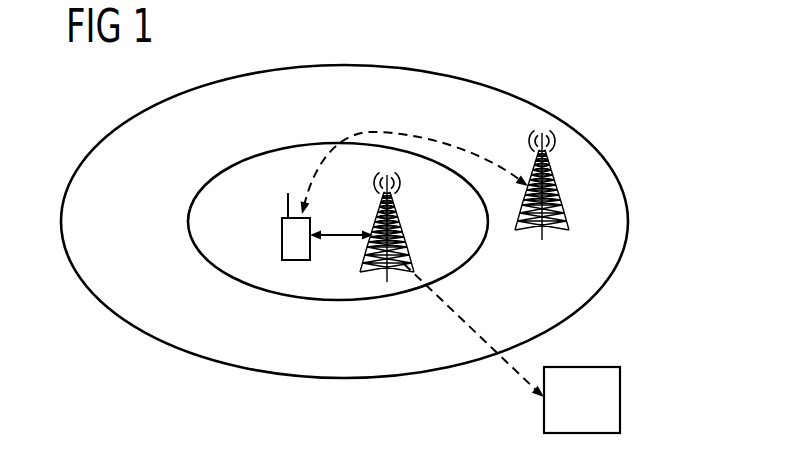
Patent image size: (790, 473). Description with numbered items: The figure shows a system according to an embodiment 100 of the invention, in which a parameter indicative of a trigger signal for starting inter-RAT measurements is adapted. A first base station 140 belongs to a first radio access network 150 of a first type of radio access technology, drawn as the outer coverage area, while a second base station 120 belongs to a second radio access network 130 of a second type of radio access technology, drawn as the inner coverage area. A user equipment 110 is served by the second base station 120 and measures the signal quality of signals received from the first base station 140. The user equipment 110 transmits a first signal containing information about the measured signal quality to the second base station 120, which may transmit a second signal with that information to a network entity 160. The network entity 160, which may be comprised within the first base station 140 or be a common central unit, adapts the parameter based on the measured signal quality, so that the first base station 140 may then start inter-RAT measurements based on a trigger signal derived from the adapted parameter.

The embodiment 100 is at (624, 63).
The user equipment 110 is at (282, 233).
The second base station 120 is at (403, 229).
The second radio access network 130 is at (187, 226).
The first base station 140 is at (532, 234).
The first radio access network 150 is at (345, 64).
The network entity 160 is at (621, 397).